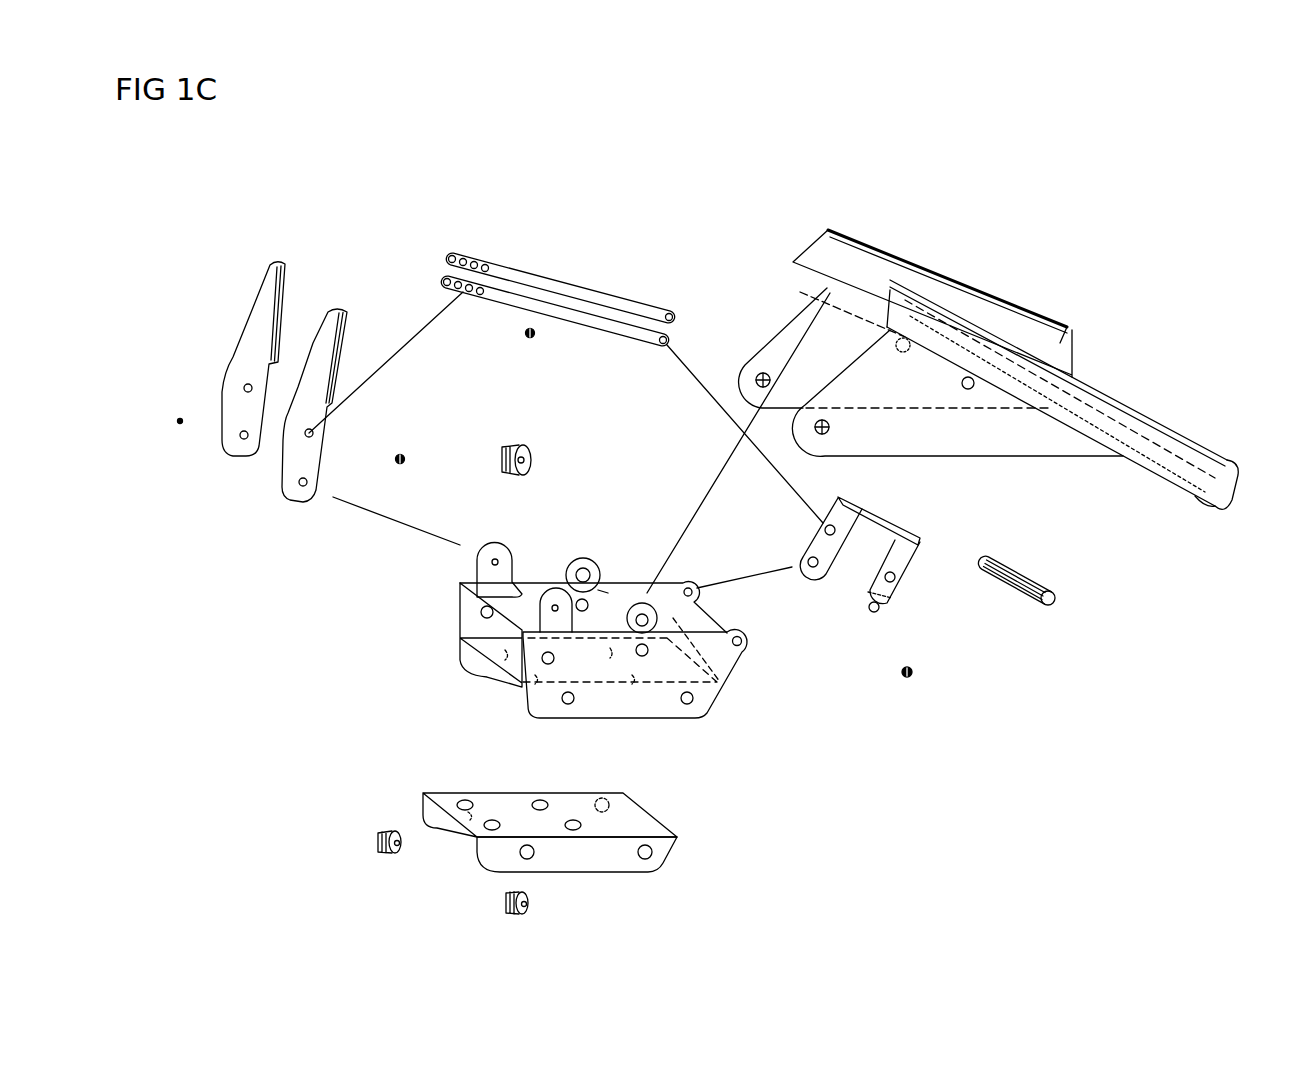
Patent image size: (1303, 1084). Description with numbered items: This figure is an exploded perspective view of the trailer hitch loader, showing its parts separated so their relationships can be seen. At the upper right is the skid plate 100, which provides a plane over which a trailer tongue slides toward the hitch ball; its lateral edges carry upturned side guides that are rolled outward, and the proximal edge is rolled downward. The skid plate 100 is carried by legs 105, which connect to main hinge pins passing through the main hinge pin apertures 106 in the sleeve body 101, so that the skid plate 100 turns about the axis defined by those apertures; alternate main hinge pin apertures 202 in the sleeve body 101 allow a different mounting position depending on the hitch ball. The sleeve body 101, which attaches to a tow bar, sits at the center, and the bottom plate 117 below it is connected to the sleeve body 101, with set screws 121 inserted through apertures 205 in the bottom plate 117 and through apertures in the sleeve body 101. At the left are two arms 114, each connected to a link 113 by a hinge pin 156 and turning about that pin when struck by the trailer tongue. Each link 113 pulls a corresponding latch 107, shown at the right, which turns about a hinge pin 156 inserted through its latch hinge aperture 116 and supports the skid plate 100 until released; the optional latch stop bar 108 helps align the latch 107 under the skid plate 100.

The skid plate 100 is at (1060, 343).
The sleeve body 101 is at (707, 710).
The legs 105 is at (833, 317).
The main hinge pin apertures 106 is at (822, 425).
The latch 107 is at (866, 562).
The latch stop bar 108 is at (968, 390).
The link 113 is at (550, 336).
The arm 114 is at (330, 325).
The latch hinge aperture 116 is at (685, 596).
The bottom plate 117 is at (497, 857).
The set screws 121 is at (577, 548).
The hinge pin 156 is at (325, 478).
The alternate main hinge pin apertures 202 is at (642, 652).
The apertures 205 is at (480, 810).